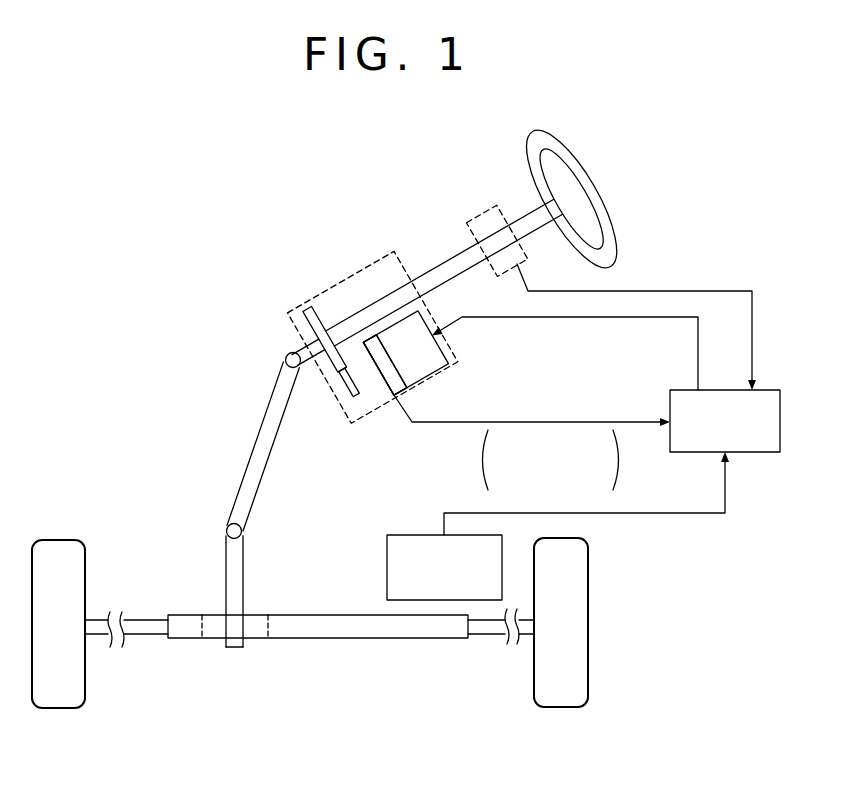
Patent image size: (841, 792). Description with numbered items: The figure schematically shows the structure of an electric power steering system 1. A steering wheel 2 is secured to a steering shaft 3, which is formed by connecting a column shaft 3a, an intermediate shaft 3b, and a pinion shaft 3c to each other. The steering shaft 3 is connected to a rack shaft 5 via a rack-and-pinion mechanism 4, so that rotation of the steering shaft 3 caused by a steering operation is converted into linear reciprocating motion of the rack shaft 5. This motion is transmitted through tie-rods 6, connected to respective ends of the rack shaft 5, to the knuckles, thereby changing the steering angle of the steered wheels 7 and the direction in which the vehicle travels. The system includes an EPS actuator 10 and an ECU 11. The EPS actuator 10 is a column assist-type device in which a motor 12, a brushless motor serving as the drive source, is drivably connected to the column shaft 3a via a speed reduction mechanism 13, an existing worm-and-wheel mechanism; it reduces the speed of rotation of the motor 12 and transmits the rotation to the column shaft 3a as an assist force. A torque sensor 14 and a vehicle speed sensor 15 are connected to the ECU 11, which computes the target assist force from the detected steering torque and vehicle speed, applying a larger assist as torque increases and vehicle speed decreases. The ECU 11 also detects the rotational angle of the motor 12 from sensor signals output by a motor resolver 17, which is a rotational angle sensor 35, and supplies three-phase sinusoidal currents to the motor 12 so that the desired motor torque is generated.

The electric power steering system 1 is at (744, 175).
The steering wheel 2 is at (598, 188).
The steering shaft 3 is at (236, 336).
The column shaft 3a is at (287, 355).
The intermediate shaft 3b is at (258, 440).
The pinion shaft 3c is at (225, 533).
The rack-and-pinion mechanism 4 is at (250, 614).
The rack shaft 5 is at (312, 614).
The tie-rods 6 is at (145, 619).
The steered wheels 7 is at (58, 540).
The EPS actuator 10 is at (350, 277).
The ECU 11 is at (780, 421).
The motor 12 is at (432, 380).
The speed reduction mechanism 13 is at (343, 398).
The torque sensor 14 is at (482, 214).
The vehicle speed sensor 15 is at (402, 533).
The motor resolver 17 is at (385, 394).
The rotational angle sensor 35 is at (384, 365).